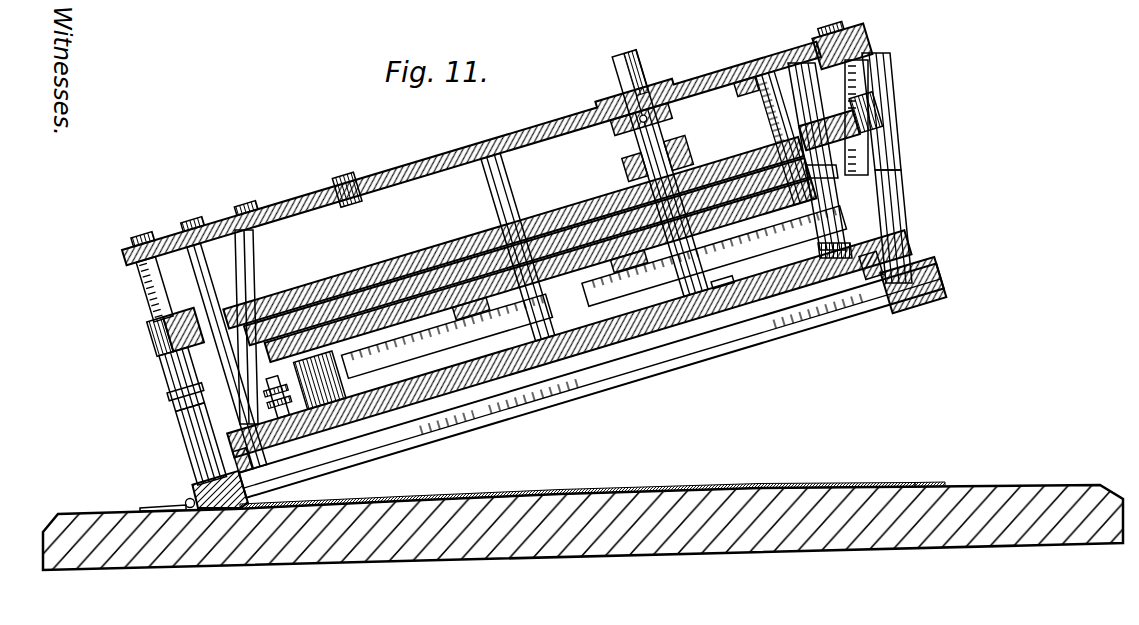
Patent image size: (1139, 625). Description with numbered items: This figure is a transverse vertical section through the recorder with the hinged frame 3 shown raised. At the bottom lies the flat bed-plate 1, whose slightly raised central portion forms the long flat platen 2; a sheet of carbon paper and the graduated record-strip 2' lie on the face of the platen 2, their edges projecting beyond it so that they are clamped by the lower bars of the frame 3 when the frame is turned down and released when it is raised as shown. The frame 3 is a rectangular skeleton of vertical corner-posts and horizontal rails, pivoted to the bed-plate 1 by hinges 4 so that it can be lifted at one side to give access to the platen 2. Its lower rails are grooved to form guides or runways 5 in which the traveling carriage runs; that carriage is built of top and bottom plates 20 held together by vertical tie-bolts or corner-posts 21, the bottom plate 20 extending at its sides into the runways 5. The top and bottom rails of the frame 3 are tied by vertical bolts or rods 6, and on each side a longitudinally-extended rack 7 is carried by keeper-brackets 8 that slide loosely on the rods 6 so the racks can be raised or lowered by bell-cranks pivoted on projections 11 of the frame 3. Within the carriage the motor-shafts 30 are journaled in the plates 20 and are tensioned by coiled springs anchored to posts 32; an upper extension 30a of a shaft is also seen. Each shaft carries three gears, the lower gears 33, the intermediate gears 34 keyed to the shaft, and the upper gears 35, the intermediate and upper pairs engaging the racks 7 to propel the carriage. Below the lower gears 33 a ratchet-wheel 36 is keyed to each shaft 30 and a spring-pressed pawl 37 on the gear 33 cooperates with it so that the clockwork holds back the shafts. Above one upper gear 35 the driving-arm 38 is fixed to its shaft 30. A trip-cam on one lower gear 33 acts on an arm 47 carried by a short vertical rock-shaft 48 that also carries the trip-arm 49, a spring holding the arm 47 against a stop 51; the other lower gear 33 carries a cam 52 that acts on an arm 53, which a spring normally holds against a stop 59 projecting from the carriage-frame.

The bed-plate 1 is at (100, 514).
The platen 2 is at (577, 511).
The record-strip 2' is at (916, 452).
The frame 3 is at (122, 252).
The hinges 4 is at (167, 506).
The guides or runways 5 is at (245, 462).
The bolts or rods 6 is at (838, 203).
The rack 7 is at (220, 327).
The keeper-brackets 8 is at (153, 337).
The projections 11 is at (200, 407).
The top and bottom plates 20 is at (430, 163).
The tie-bolts or corner-posts 21 is at (150, 278).
The motor-shafts 30 is at (343, 172).
The post 30a is at (617, 57).
The posts 32 is at (493, 182).
The lower gears 33 is at (277, 290).
The intermediate gears 34 is at (310, 310).
The upper gears 35 is at (413, 262).
The ratchet-wheel 36 is at (455, 307).
The pawl 37 is at (974, 238).
The driving-arm 38 is at (677, 143).
The arm 47 is at (838, 205).
The rock-shaft 48 is at (743, 90).
The trip-arm 49 is at (760, 132).
The stop 51 is at (725, 292).
The cam 52 is at (185, 400).
The arm 53 is at (265, 388).
The stop 59 is at (415, 430).